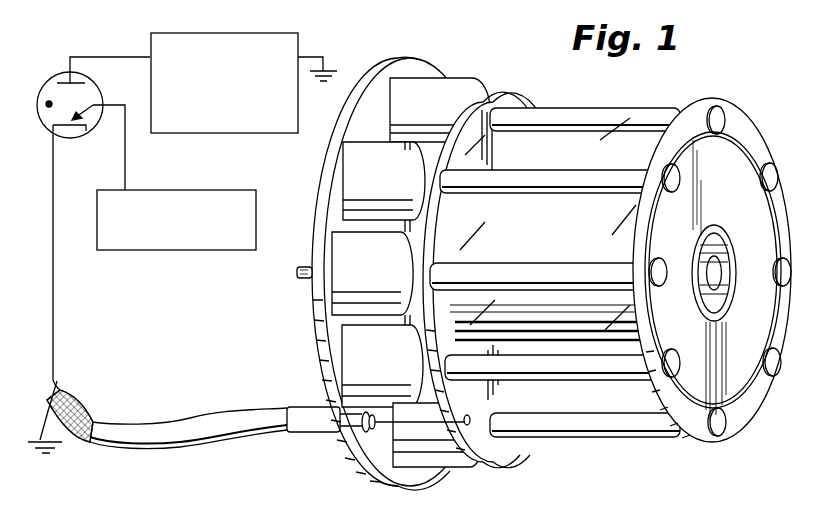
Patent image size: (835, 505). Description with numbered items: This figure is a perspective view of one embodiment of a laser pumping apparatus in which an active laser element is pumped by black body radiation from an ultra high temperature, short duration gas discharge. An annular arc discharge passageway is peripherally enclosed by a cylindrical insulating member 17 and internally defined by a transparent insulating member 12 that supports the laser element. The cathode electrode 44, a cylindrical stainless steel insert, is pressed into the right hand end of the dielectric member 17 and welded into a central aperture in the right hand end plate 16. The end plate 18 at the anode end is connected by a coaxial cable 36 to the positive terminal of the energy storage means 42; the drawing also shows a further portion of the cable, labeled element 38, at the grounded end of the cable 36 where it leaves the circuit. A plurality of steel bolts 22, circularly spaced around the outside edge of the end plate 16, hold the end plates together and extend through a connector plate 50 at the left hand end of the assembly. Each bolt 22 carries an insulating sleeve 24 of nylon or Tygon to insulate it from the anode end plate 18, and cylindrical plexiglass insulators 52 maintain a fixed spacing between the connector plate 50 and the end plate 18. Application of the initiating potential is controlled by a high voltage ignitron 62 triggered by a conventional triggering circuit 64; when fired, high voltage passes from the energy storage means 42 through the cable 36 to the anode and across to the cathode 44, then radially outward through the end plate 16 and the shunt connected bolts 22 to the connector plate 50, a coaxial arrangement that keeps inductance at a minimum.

The transparent insulating member 12 is at (718, 284).
The end plate 16 is at (751, 125).
The cylindrical insulating member 17 is at (568, 166).
The end plate 18 is at (495, 101).
The bolts 22 is at (298, 275).
The insulating sleeve 24 is at (522, 185).
The coaxial cable 36 is at (187, 420).
The braided shield 38 is at (80, 418).
The energy storage means 42 is at (299, 42).
The cathode electrode 44 is at (730, 238).
The connector plate 50 is at (420, 46).
The cylindrical plexiglass insulators 52 is at (452, 79).
The high voltage ignitron 62 is at (61, 78).
The triggering circuit 64 is at (210, 191).